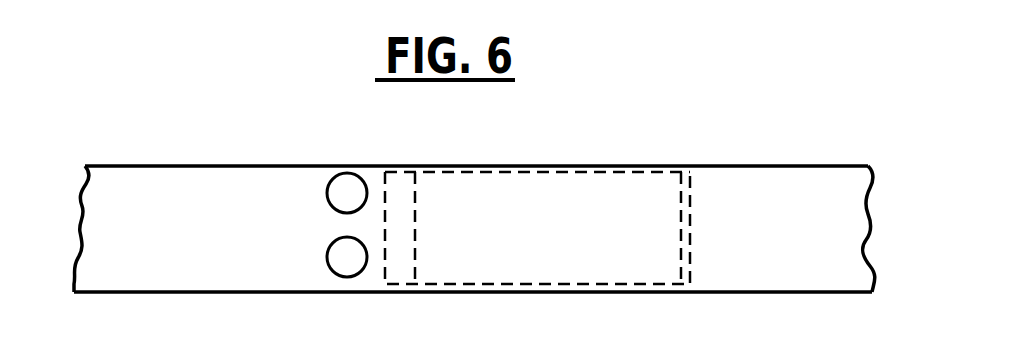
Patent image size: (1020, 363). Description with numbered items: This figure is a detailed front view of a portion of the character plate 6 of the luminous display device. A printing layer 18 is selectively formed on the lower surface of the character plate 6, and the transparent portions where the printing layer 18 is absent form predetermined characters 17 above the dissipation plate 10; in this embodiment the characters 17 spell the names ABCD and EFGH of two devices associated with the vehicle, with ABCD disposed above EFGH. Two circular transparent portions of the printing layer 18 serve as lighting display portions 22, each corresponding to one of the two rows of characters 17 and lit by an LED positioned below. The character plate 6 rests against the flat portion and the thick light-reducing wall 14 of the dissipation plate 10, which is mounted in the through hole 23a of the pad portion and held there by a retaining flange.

The character plate 6 is at (268, 172).
The dissipation plate 10 is at (553, 287).
The light-reducing wall 14 is at (420, 286).
The characters 17 is at (510, 172).
The printing layer 18 is at (677, 172).
The lighting display portions 22 is at (332, 197).
The through hole 23a is at (683, 286).